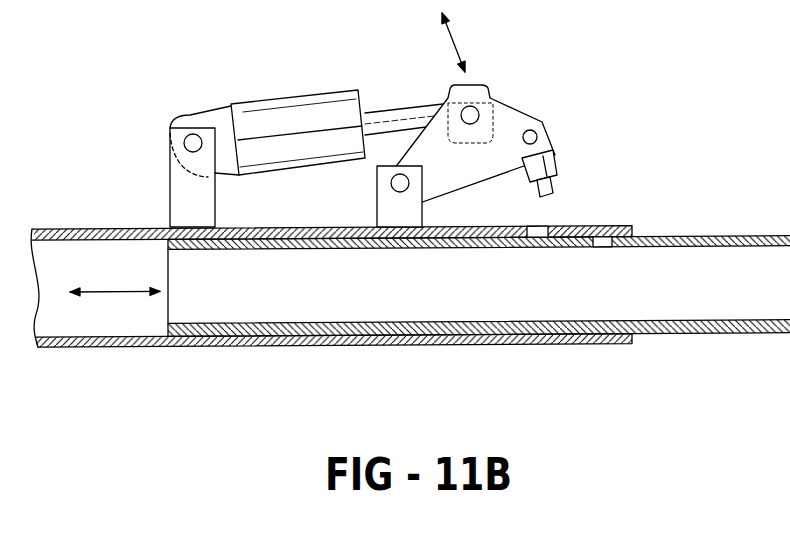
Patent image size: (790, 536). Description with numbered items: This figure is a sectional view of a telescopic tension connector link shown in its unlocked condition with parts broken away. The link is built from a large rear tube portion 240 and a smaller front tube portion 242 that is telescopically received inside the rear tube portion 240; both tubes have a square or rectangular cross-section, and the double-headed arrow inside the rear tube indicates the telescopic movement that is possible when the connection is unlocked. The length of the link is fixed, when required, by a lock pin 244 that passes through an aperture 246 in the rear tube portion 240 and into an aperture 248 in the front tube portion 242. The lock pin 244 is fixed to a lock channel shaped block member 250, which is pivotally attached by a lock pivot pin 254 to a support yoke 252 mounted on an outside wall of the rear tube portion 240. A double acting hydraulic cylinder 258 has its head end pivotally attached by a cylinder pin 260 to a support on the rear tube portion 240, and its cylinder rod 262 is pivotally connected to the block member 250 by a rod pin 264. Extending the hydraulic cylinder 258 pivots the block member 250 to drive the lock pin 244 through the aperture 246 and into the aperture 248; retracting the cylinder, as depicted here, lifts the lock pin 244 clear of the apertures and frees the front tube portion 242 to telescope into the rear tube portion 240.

The rear tube portion 240 is at (54, 227).
The front tube portion 242 is at (758, 234).
The lock pin 244 is at (557, 183).
The aperture 246 is at (534, 227).
The aperture 248 is at (602, 245).
The lock channel shaped block member 250 is at (536, 117).
The support yoke 252 is at (378, 218).
The lock pivot pin 254 is at (400, 183).
The double acting hydraulic cylinder 258 is at (278, 99).
The cylinder pin 260 is at (193, 143).
The cylinder rod 262 is at (402, 109).
The rod pin 264 is at (472, 114).